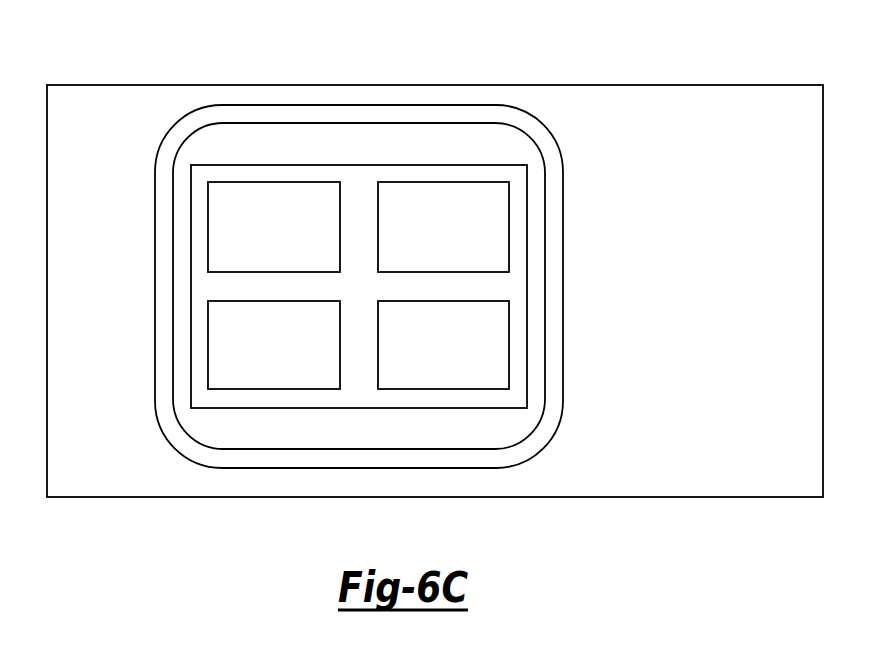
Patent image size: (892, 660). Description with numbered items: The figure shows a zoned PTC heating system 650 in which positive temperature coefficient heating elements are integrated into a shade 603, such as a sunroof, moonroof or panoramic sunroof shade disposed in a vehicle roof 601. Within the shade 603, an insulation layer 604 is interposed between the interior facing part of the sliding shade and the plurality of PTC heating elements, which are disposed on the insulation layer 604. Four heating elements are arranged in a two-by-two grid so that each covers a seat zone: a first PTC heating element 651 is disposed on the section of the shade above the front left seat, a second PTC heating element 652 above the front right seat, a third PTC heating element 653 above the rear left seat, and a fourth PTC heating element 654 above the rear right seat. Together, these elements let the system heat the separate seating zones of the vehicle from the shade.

The vehicle roof 601 is at (755, 149).
The shade 603 is at (283, 139).
The insulation layer 604 is at (357, 177).
The zoned PTC heating system 650 is at (678, 580).
The first PTC heating element 651 is at (269, 352).
The second PTC heating element 652 is at (304, 234).
The third PTC heating element 653 is at (438, 352).
The fourth PTC heating element 654 is at (474, 234).